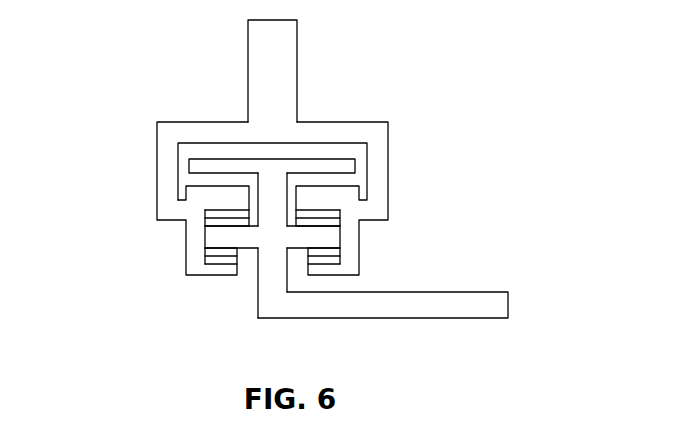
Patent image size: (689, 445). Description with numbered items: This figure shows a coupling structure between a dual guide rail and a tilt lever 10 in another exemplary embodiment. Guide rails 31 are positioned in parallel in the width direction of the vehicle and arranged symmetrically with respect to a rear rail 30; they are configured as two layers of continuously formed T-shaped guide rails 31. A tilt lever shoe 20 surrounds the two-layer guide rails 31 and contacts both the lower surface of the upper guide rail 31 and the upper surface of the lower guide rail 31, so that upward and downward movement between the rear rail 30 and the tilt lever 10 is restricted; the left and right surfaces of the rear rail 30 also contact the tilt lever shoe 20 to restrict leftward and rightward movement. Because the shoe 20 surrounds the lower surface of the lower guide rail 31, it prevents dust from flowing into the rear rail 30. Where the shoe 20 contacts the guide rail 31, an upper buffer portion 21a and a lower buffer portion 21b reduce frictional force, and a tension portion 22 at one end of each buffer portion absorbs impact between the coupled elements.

The tilt lever 10 is at (282, 57).
The tilt lever shoe 20 is at (167, 145).
The upper buffer portion 21a is at (210, 222).
The lower buffer portion 21b is at (213, 250).
The tension portion 22 is at (227, 212).
The rear rail 30 is at (473, 298).
The guide rail 31 is at (303, 233).